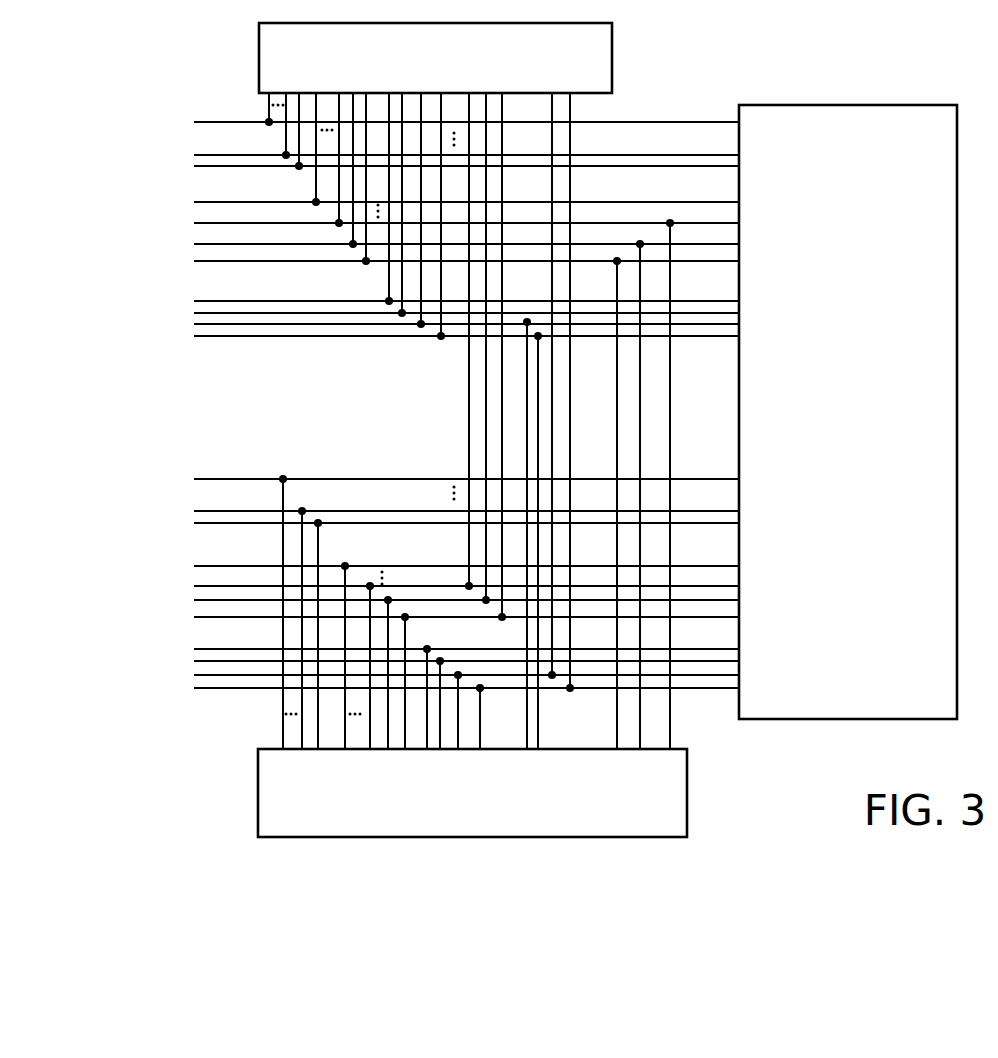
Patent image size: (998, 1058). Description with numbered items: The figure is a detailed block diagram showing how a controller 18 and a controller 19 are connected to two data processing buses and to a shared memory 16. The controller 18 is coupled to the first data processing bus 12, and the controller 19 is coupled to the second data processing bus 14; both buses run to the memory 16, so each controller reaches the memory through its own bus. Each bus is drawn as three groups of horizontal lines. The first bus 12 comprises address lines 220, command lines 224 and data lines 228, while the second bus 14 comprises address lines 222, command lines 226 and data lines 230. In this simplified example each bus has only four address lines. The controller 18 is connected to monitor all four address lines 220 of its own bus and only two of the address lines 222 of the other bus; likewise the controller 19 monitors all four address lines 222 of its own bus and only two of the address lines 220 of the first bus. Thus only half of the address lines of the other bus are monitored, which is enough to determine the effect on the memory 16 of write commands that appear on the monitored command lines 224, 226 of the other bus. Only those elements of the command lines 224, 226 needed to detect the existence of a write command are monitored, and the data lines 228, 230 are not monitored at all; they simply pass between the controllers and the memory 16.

The first data processing bus 12 is at (106, 109).
The second data processing bus 14 is at (106, 472).
The memory 16 is at (836, 425).
The controller 18 is at (422, 71).
The controller 19 is at (458, 805).
The address lines 220 is at (190, 288).
The address lines 222 is at (190, 642).
The command lines 224 is at (190, 198).
The command lines 226 is at (190, 560).
The data lines 228 is at (190, 118).
The data lines 230 is at (190, 474).